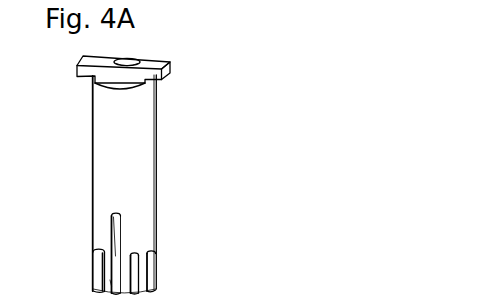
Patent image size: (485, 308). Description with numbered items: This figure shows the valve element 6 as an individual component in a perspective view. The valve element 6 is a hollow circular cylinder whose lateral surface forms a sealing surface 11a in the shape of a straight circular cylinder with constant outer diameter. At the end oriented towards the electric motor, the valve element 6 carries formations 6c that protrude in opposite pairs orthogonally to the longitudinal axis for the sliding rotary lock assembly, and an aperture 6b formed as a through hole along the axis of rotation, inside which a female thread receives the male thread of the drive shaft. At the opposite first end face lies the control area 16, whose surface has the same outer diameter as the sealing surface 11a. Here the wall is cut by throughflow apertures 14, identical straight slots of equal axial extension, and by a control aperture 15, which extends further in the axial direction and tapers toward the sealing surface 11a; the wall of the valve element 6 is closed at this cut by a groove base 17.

The valve element 6 is at (191, 53).
The aperture 6b is at (132, 61).
The formations 6c is at (84, 70).
The sealing surface 11a is at (157, 173).
The throughflow apertures 14 is at (98, 264).
The control aperture 15 is at (110, 280).
The control area 16 is at (197, 216).
The groove base 17 is at (111, 230).